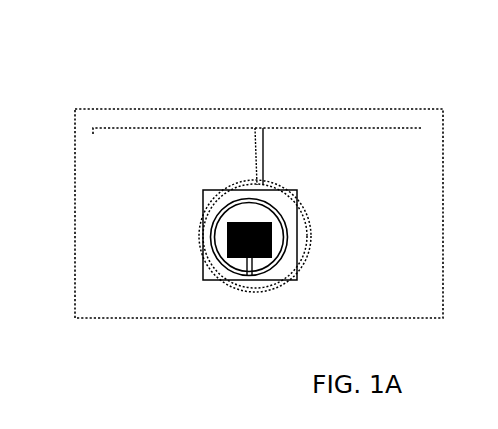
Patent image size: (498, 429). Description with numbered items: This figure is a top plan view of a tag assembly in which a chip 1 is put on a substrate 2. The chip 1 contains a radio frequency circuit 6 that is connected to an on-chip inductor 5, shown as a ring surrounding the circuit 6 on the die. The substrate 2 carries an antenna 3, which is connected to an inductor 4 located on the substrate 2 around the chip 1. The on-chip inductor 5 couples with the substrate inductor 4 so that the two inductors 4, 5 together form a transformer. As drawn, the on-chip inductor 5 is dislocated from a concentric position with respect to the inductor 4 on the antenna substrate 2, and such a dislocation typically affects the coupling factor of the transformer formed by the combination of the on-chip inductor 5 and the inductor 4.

The chip 1 is at (203, 196).
The substrate 2 is at (75, 211).
The antenna 3 is at (155, 128).
The inductor 4 is at (311, 211).
The on-chip inductor 5 is at (280, 262).
The radio frequency circuit 6 is at (249, 248).